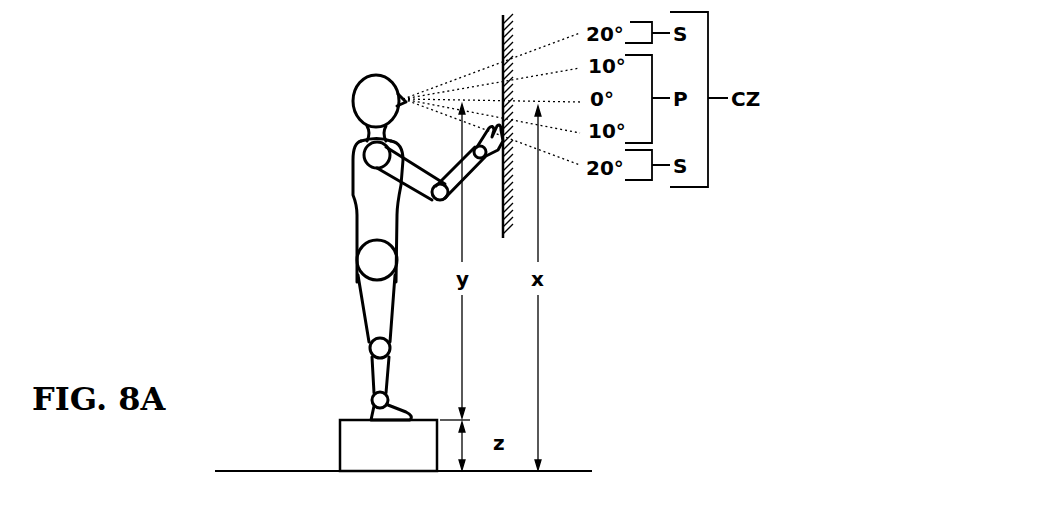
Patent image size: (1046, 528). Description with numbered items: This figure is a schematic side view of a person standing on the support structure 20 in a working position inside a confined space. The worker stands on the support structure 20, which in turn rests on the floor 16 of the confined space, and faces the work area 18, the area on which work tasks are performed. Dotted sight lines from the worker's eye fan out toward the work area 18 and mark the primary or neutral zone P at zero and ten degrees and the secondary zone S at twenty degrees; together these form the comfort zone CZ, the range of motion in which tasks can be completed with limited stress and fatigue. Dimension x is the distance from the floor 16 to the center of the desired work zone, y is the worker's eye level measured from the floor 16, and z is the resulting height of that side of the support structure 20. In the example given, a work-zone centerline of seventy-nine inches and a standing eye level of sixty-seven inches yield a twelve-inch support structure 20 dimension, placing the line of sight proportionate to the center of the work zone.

The floor 16 is at (565, 470).
The work area 18 is at (503, 37).
The support structure 20 is at (350, 432).